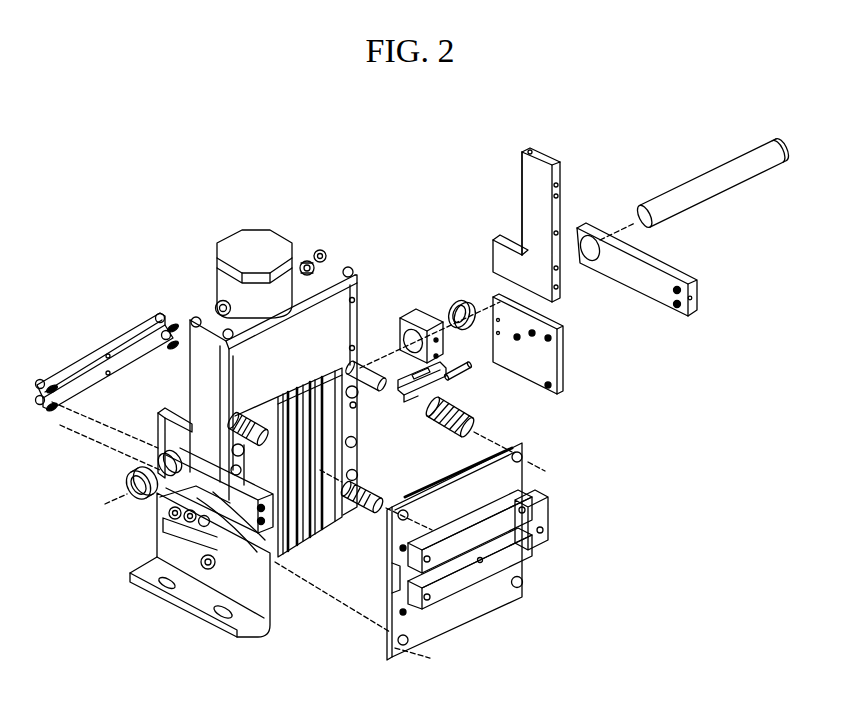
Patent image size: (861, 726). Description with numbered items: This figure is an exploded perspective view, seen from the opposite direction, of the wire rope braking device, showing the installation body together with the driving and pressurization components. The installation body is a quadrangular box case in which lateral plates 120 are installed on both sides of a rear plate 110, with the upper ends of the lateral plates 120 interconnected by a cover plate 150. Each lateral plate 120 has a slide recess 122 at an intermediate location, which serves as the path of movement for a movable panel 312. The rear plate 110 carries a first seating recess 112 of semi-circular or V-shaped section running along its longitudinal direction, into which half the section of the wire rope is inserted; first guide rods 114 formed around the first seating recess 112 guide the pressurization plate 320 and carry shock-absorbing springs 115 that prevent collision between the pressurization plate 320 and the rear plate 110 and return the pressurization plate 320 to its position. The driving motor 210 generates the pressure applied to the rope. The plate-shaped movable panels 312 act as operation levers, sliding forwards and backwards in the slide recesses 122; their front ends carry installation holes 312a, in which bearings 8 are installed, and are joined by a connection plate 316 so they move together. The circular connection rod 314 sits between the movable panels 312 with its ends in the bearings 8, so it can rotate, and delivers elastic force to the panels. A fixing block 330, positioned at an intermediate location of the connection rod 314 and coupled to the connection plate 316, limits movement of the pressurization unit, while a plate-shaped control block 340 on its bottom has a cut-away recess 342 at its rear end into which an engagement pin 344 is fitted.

The bearing ring 8 is at (127, 491).
The rear plate 110 is at (350, 318).
The first seating recess 112 is at (308, 540).
The first guide rods 114 is at (378, 385).
The shock-absorbing springs 115 is at (466, 416).
The lateral plates 120 is at (502, 256).
The slide recesses 122 is at (543, 308).
The cover plate 150 is at (334, 266).
The driving motor 210 is at (222, 282).
The movable panels 312 is at (643, 288).
The installation holes 312a is at (580, 229).
The connection rod 314 is at (668, 187).
The connection plate 316 is at (118, 355).
The pressurization plate 320 is at (518, 479).
The fixing block 330 is at (409, 317).
The control block 340 is at (406, 396).
The cut-away recess 342 is at (450, 380).
The engagement pin 344 is at (461, 373).